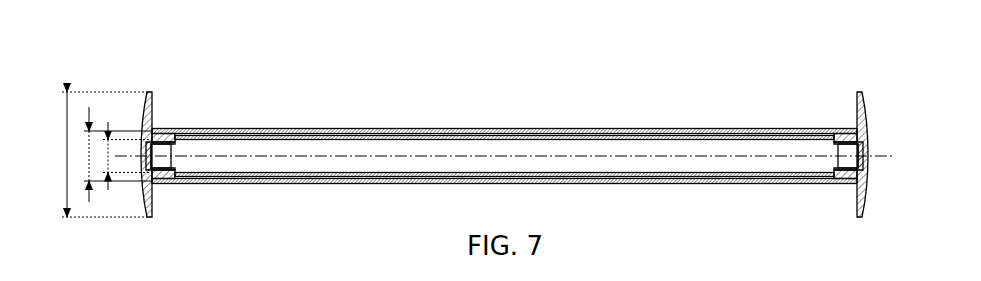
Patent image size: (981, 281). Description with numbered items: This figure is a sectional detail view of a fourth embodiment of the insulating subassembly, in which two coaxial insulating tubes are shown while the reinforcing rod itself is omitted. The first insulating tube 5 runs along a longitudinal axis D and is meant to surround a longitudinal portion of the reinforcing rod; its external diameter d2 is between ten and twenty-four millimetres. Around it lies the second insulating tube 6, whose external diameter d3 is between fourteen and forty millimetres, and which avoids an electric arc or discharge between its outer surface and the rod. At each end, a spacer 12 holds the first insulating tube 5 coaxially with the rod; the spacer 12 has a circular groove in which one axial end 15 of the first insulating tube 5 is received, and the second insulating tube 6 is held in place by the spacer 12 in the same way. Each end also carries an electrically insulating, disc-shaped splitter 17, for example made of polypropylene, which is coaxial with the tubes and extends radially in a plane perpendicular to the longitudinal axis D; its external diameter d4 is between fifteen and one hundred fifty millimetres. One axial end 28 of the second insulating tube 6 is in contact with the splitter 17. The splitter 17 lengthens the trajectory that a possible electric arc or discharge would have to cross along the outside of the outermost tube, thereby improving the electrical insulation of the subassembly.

The first insulating tube 5 is at (397, 141).
The second insulating tube 6 is at (632, 128).
The spacer 12 is at (163, 178).
The axial end 15 is at (163, 135).
The splitter 17 is at (148, 116).
The axial end 28 is at (153, 131).
The longitudinal axis D is at (888, 152).
The external diameter d2 is at (126, 166).
The external diameter d3 is at (118, 149).
The external diameter d4 is at (94, 154).